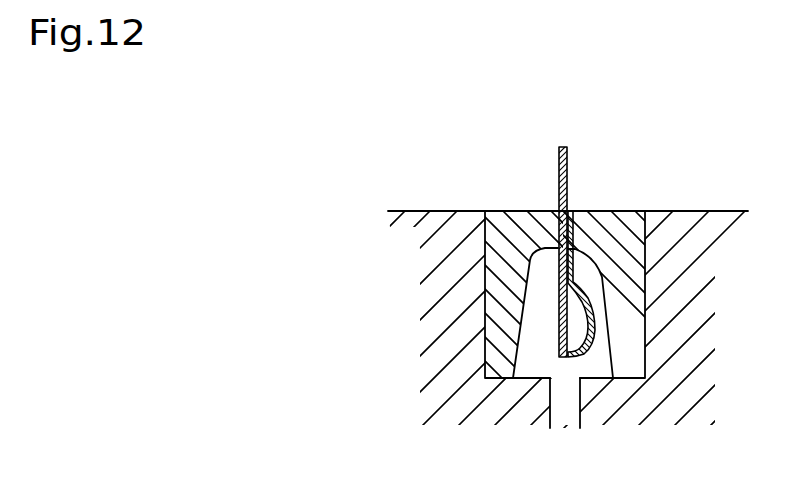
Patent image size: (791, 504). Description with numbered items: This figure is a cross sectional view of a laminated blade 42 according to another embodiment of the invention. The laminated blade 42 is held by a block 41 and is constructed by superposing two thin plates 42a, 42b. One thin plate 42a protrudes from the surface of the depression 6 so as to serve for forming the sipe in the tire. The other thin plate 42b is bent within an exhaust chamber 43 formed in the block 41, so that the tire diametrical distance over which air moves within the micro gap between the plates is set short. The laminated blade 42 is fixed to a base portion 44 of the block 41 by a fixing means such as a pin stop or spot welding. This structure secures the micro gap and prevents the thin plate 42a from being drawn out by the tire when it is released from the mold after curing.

The depression 6 is at (703, 211).
The block 41 is at (490, 307).
The laminated blade 42 is at (560, 310).
The thin plate 42a is at (568, 162).
The thin plate 42b is at (589, 211).
The exhaust chamber 43 is at (535, 373).
The base portion 44 is at (523, 211).